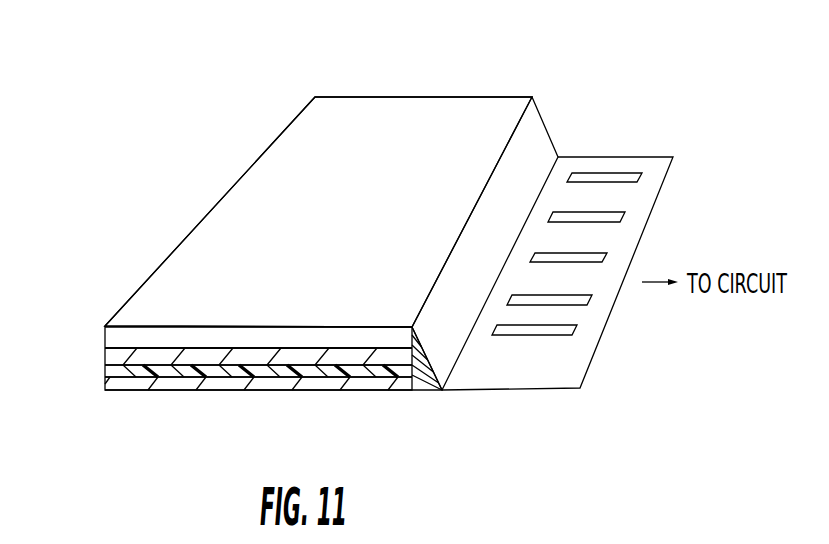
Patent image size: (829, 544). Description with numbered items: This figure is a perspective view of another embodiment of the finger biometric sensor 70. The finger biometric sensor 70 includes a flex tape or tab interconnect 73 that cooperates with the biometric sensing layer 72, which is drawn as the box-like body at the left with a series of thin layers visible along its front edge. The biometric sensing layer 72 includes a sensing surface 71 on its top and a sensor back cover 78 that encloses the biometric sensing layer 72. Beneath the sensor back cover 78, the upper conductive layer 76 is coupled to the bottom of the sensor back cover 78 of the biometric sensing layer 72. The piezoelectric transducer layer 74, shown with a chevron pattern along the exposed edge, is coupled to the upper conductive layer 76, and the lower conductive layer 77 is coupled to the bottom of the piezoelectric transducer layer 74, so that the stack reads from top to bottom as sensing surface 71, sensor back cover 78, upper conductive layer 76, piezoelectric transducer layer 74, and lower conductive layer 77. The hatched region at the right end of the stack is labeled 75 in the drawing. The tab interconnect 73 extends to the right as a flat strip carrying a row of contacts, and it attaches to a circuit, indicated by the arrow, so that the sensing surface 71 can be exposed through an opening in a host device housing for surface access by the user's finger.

The finger biometric sensor 70 is at (183, 130).
The sensing surface 71 is at (163, 290).
The biometric sensing layer 72 is at (143, 353).
The tab interconnect 73 is at (563, 207).
The piezoelectric transducer layer 74 is at (107, 372).
The side edge 75 is at (420, 375).
The upper conductive layer 76 is at (110, 355).
The lower conductive layer 77 is at (107, 383).
The sensor back cover 78 is at (103, 337).